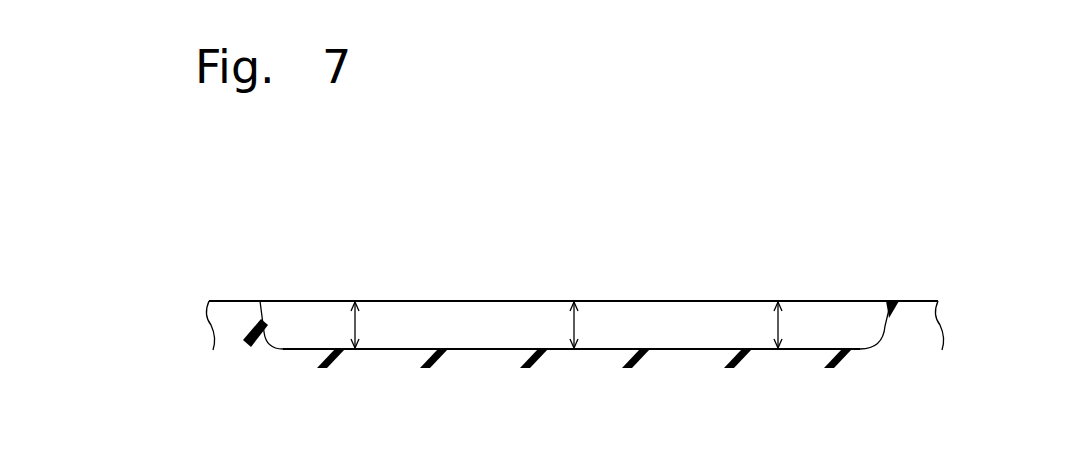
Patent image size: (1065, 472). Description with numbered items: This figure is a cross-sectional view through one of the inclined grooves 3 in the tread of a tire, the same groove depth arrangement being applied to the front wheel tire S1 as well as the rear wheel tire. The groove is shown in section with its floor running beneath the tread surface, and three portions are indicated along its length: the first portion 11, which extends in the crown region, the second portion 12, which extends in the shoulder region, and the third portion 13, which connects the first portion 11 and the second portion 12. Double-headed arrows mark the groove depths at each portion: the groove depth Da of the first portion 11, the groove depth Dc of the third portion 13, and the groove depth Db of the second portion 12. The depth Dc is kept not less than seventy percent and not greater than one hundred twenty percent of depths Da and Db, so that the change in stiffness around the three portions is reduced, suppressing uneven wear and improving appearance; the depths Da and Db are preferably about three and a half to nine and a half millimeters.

The inclined groove 3 is at (869, 197).
The front wheel tire S1 is at (924, 220).
The first portion 11 is at (316, 273).
The second portion 12 is at (776, 273).
The third portion 13 is at (565, 273).
The groove depth of the first portion Da is at (359, 327).
The groove depth of the third portion Dc is at (578, 327).
The groove depth of the second portion Db is at (782, 327).